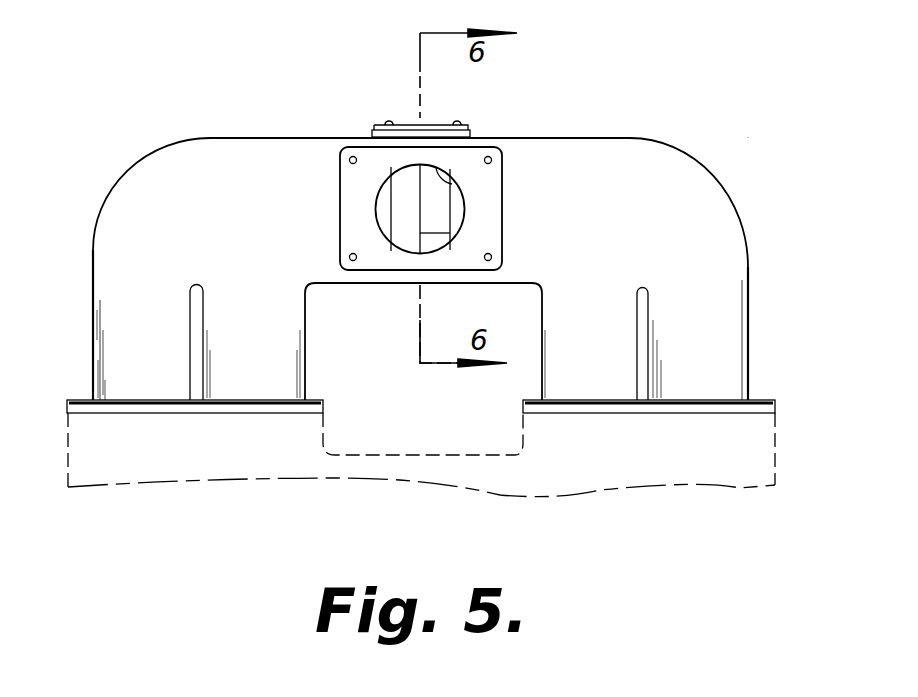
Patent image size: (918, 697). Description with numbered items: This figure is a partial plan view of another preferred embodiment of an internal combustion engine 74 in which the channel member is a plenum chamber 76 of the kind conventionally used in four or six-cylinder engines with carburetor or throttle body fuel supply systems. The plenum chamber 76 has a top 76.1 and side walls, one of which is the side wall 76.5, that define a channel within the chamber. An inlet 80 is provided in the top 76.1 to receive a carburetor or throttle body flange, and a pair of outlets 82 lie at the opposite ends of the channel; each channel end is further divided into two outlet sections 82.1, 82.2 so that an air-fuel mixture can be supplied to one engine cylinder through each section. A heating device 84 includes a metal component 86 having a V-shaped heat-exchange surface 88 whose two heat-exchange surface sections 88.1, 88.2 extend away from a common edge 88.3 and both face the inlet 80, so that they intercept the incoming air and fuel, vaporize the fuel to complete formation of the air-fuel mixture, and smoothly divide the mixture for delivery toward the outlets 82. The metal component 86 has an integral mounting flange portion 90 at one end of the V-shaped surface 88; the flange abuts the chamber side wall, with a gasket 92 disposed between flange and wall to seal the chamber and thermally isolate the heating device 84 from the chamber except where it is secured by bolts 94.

The internal combustion engine 74 is at (750, 132).
The plenum chamber 76 is at (702, 205).
The top 76.1 is at (625, 153).
The side wall 76.5 is at (330, 285).
The inlet 80 is at (440, 190).
The outlets 82 is at (166, 267).
The outlet section 82.1 is at (135, 370).
The outlet section 82.2 is at (253, 378).
The heating device 84 is at (392, 229).
The metal component 86 is at (392, 211).
The V-shaped heat-exchange surface 88 is at (408, 192).
The heat-exchange surface section 88.1 is at (396, 182).
The heat-exchange surface section 88.2 is at (437, 212).
The common edge 88.3 is at (450, 233).
The mounting flange portion 90 is at (460, 122).
The gasket 92 is at (472, 131).
The bolts 94 is at (391, 121).